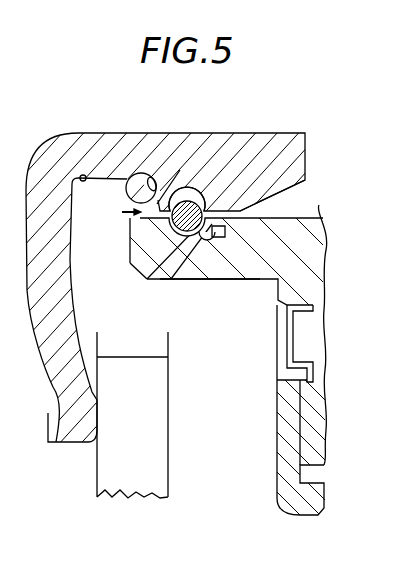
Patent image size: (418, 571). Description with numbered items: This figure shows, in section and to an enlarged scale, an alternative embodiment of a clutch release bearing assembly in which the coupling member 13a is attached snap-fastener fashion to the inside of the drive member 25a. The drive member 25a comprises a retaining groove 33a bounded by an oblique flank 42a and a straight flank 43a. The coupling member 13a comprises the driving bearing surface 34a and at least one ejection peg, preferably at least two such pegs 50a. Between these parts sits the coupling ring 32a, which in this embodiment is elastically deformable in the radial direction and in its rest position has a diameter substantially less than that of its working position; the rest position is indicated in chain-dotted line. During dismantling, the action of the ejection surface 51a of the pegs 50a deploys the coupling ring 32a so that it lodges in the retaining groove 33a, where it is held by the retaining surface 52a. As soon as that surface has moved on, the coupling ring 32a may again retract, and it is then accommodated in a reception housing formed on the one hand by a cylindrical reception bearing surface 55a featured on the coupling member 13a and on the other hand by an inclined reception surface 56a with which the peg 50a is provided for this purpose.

The coupling member 13a is at (240, 127).
The cylindrical reception bearing surface 55a is at (83, 174).
The coupling ring 32a is at (118, 176).
The inclined reception surface 56a is at (148, 174).
The driving bearing surface 34a is at (193, 186).
The oblique flank 42a is at (160, 280).
The straight flank 43a is at (214, 228).
The retaining groove 33a is at (207, 280).
The retaining surface 52a is at (130, 246).
The ejection surface 51a is at (132, 266).
The ejection peg 50a is at (122, 212).
The drive member 25a is at (323, 218).